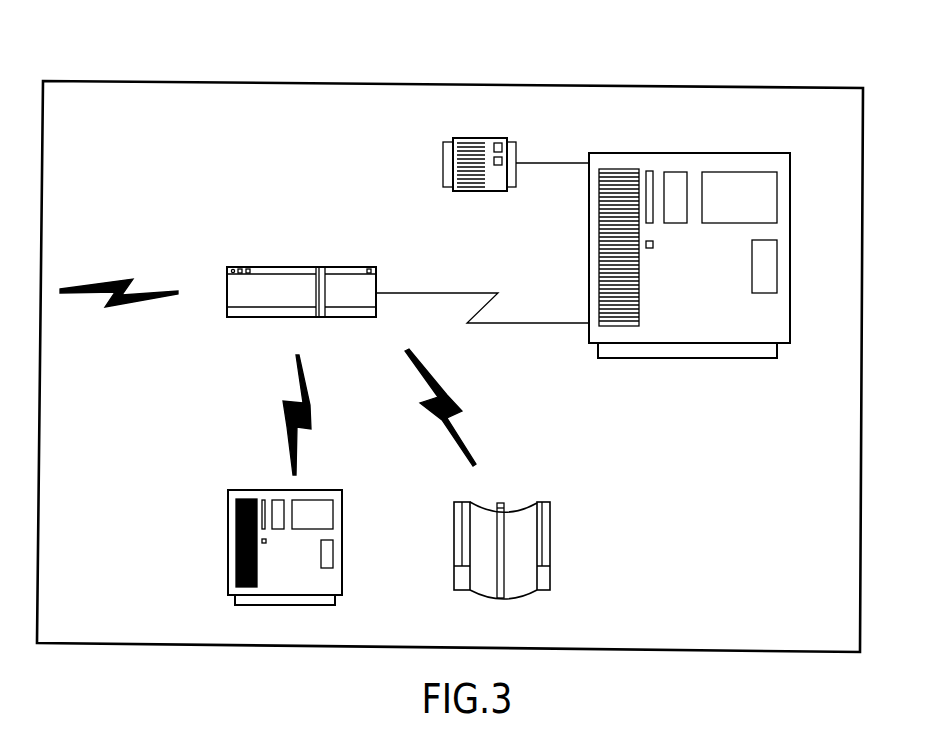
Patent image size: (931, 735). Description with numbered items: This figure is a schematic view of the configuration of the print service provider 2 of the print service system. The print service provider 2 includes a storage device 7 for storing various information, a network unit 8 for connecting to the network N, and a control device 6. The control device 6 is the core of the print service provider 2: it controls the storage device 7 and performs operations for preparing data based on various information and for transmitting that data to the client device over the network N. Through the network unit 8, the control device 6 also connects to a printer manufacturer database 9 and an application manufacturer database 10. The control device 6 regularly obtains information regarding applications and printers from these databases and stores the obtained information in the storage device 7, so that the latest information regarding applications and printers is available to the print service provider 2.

The print service provider 2 is at (742, 88).
The control device 6 is at (747, 152).
The storage device 7 is at (497, 136).
The network unit 8 is at (345, 267).
The network N is at (122, 282).
The printer manufacturer database 9 is at (323, 489).
The application manufacturer database 10 is at (537, 502).